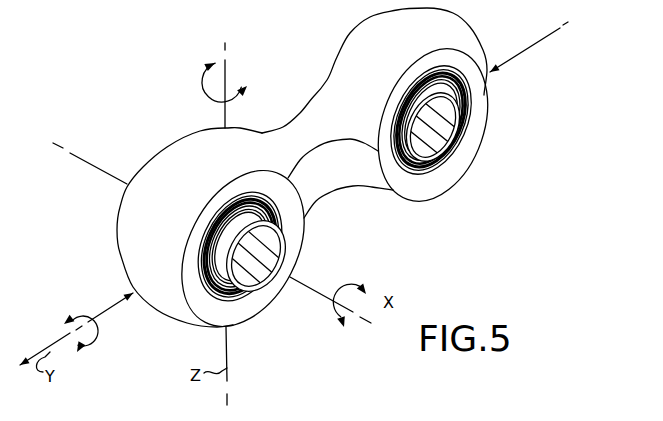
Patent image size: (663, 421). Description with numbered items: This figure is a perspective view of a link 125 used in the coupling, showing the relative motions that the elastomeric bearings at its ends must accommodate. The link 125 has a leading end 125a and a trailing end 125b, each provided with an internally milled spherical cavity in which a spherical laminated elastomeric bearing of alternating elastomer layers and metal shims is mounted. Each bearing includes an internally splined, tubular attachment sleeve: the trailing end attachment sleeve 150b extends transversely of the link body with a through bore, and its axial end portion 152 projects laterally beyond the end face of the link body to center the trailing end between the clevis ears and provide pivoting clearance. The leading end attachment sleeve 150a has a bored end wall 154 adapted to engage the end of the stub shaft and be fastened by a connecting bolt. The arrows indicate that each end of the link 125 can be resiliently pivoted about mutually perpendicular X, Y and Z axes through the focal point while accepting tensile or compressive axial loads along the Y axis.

The link 125 is at (253, 157).
The leading end 125a is at (447, 34).
The trailing end 125b is at (136, 262).
The leading end attachment sleeve 150a is at (468, 117).
The trailing end attachment sleeve 150b is at (261, 309).
The axial end portion 152 is at (286, 236).
The bored end wall 154 is at (459, 130).